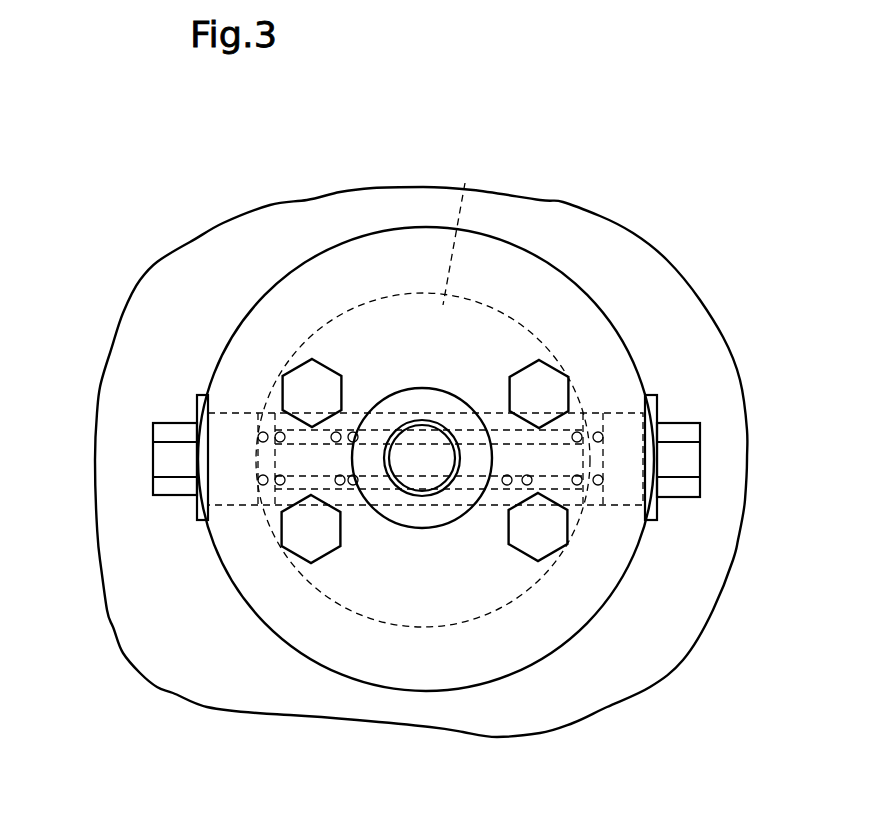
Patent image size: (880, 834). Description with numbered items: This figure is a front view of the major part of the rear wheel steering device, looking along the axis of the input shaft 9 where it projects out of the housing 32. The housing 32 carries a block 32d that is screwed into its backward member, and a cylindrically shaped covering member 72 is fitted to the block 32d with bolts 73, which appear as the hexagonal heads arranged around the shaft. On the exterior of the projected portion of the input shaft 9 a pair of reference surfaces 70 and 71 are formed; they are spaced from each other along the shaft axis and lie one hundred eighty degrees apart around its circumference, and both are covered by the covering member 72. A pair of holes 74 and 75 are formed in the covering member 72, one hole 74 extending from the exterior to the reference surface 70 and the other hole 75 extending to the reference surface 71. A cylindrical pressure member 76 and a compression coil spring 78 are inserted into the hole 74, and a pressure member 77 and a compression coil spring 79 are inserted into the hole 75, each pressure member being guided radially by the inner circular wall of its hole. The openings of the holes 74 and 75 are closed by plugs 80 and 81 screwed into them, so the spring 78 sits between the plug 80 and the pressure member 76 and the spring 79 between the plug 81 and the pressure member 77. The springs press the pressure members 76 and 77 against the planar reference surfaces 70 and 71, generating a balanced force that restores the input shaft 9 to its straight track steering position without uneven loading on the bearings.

The input shaft 9 is at (430, 480).
The housing 32 is at (260, 690).
The block 32d is at (471, 225).
The reference surface 70 is at (485, 412).
The reference surface 71 is at (394, 400).
The covering member 72 is at (410, 670).
The bolts 73 is at (309, 382).
The hole 74 is at (493, 503).
The hole 75 is at (350, 413).
The pressure member 76 is at (543, 350).
The pressure member 77 is at (370, 508).
The compression coil spring 78 is at (603, 487).
The compression coil spring 79 is at (283, 503).
The plug 80 is at (680, 470).
The plug 81 is at (163, 465).